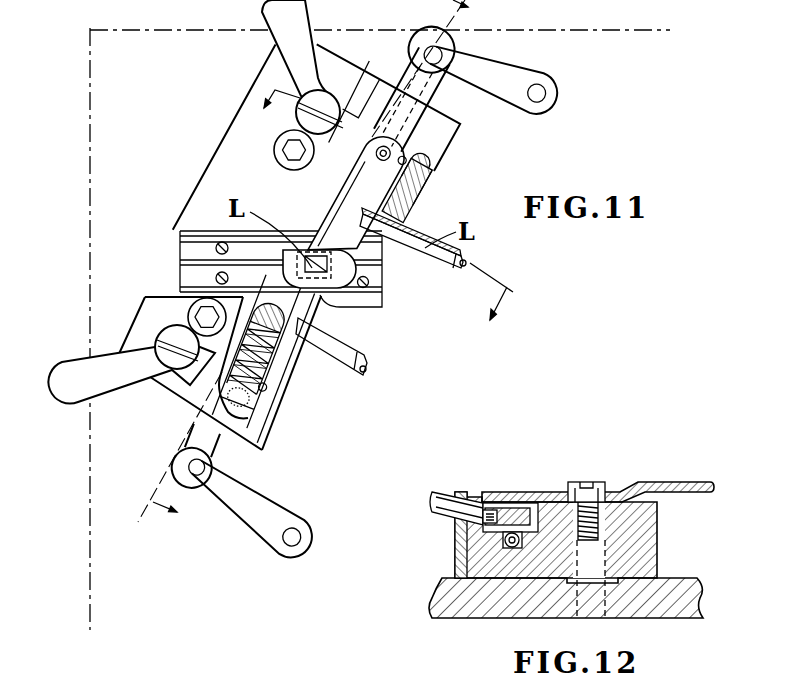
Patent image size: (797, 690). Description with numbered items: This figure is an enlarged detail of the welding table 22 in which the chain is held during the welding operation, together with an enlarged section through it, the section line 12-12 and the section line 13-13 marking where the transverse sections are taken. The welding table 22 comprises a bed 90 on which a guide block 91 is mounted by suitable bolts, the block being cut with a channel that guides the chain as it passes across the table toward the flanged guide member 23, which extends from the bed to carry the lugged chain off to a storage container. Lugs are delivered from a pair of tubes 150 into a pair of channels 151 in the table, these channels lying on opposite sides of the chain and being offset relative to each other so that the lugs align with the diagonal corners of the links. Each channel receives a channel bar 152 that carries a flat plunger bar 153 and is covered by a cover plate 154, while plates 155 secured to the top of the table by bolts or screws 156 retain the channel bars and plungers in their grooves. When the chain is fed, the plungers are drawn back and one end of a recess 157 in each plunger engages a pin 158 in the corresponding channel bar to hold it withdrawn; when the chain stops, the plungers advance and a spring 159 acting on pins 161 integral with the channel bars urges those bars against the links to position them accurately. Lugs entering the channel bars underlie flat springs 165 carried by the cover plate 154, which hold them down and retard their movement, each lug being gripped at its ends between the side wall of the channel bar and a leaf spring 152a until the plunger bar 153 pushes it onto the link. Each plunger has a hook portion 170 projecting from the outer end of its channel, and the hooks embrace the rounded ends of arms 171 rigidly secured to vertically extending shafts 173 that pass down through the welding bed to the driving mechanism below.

In FIG. 11, the section line 12- 12 is at (380, 220).
In FIG. 11, the section line 13- 13 is at (317, 267).
In FIG. 11, the welding table 22 is at (182, 266).
In FIG. 11, the flanged guide member 23 is at (195, 260).
In FIG. 11, the bed 90 is at (218, 163).
In FIG. 12, the bed 90 is at (686, 580).
In FIG. 12, the guide block 91 is at (637, 545).
In FIG. 11, the tubes 150 is at (445, 266).
In FIG. 11, the channels 151 is at (437, 205).
In FIG. 12, the channels 151 is at (545, 496).
In FIG. 11, the channel bar 152 is at (322, 312).
In FIG. 12, the channel bar 152 is at (522, 500).
In FIG. 11, the leaf spring 152a is at (318, 232).
In FIG. 11, the plunger bar 153 is at (410, 221).
In FIG. 12, the cover plate 154 is at (507, 514).
In FIG. 11, the plates 155 is at (190, 408).
In FIG. 12, the plates 155 is at (540, 490).
In FIG. 12, the bolts or screws 156 is at (603, 483).
In FIG. 11, the recess 157 is at (446, 168).
In FIG. 11, the pin 158 is at (440, 182).
In FIG. 11, the spring 159 is at (243, 408).
In FIG. 11, the pins 161 is at (273, 353).
In FIG. 11, the flat springs 165 is at (380, 240).
In FIG. 11, the hook portion 170 is at (421, 42).
In FIG. 11, the arms 171 is at (207, 470).
In FIG. 11, the vertically extending shafts 173 is at (546, 92).